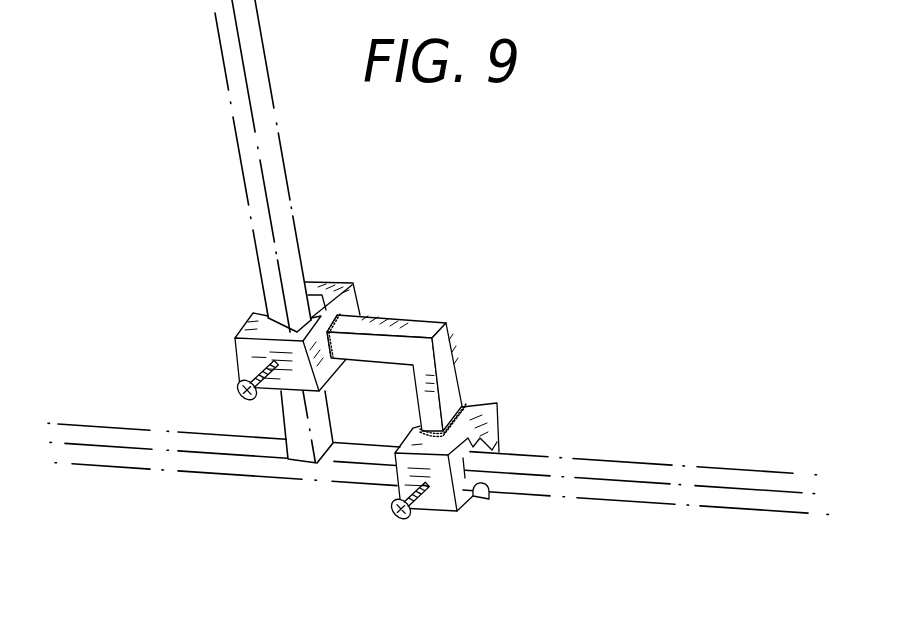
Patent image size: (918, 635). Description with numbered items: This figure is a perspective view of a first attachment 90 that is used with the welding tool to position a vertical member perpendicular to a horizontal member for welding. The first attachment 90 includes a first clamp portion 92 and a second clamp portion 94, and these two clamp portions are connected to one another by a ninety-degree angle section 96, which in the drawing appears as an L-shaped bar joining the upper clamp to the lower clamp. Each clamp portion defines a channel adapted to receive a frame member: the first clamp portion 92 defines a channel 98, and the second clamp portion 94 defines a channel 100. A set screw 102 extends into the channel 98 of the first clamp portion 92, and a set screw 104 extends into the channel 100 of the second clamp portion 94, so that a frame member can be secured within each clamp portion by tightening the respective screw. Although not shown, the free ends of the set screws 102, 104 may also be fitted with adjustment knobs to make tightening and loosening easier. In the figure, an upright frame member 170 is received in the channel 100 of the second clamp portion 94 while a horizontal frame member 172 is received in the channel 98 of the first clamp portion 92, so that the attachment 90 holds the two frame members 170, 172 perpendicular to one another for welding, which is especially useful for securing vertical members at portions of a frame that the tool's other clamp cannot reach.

The first attachment 90 is at (490, 283).
The first clamp portion 92 is at (504, 436).
The second clamp portion 94 is at (343, 284).
The 90-degree angle section 96 is at (450, 356).
The channel 98 is at (487, 508).
The channel 100 is at (266, 311).
The set screw 102 is at (400, 517).
The set screw 104 is at (239, 398).
The frame member 170 is at (279, 184).
The frame member 172 is at (640, 495).